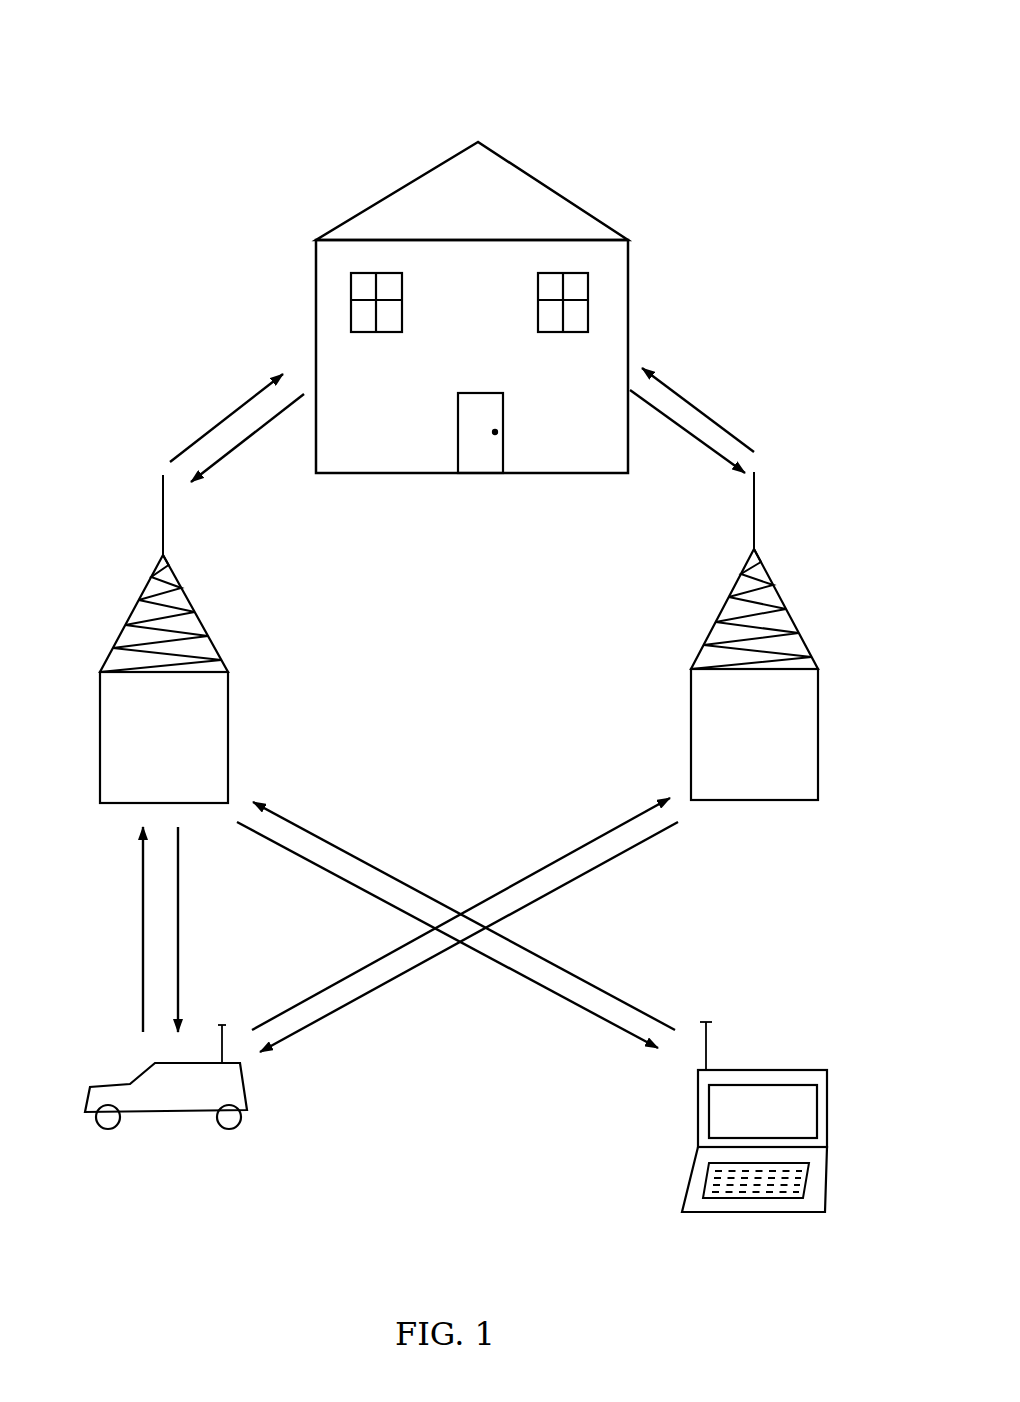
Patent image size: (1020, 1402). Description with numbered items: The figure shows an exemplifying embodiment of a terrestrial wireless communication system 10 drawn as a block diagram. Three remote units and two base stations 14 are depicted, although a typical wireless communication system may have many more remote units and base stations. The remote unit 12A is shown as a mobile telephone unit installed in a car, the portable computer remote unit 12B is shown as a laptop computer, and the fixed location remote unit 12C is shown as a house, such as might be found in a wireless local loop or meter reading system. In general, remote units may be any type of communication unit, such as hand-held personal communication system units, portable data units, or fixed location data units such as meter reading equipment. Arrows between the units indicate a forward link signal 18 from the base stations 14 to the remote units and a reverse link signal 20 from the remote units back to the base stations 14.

The terrestrial wireless communication system 10 is at (695, 30).
The remote unit 12A is at (108, 1083).
The portable computer remote unit 12B is at (803, 1068).
The fixed location remote unit 12C is at (550, 185).
The base station 14 is at (133, 608).
The forward link signal 18 is at (242, 405).
The reverse link signal 20 is at (262, 430).